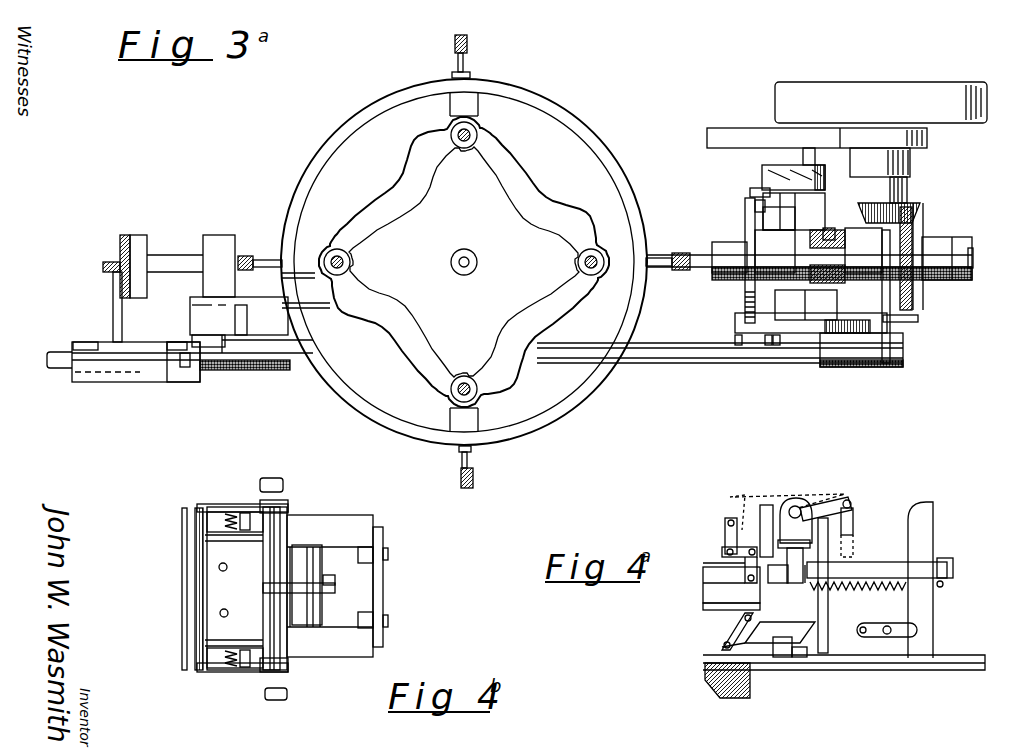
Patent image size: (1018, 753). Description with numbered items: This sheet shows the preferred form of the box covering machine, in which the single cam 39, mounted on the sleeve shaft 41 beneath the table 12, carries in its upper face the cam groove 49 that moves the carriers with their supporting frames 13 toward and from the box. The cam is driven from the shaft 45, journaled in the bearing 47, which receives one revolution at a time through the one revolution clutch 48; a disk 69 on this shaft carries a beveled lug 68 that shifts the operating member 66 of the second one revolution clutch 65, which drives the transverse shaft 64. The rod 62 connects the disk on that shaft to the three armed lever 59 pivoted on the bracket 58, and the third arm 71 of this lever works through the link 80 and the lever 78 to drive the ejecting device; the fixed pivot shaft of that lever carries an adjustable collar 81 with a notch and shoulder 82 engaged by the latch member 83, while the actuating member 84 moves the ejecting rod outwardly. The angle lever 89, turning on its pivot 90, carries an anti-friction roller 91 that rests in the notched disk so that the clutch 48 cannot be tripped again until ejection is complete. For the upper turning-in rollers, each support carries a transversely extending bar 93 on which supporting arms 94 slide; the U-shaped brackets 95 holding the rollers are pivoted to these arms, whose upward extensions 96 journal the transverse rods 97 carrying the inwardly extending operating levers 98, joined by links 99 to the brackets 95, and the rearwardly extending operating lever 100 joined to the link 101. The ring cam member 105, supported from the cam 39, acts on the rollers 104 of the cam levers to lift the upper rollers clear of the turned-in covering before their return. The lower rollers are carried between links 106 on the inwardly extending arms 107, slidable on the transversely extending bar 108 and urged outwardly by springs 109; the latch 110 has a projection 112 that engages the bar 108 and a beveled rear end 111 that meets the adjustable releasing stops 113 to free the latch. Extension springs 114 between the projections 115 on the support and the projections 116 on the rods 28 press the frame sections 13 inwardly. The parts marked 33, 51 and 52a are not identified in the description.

In FIG. 4a, the table 12 is at (703, 607).
In FIG. 4a, the supporting frames 13 is at (773, 584).
In FIG. 4b, the rods 28 is at (350, 620).
In FIG. 4a, the rods 28 is at (888, 564).
In FIG. 3a, the gear 33 is at (886, 330).
In FIG. 3a, the cam 39 is at (386, 190).
In FIG. 3a, the sleeve shaft 41 is at (477, 259).
In FIG. 3a, the shaft 45 is at (700, 252).
In FIG. 3a, the bearing 47 is at (830, 230).
In FIG. 3a, the one revolution clutch 48 is at (912, 222).
In FIG. 3a, the cam groove 49 is at (464, 262).
In FIG. 4a, the support block 51 is at (705, 592).
In FIG. 3a, the guide rail 52a is at (712, 362).
In FIG. 3a, the bracket 58 is at (182, 263).
In FIG. 3a, the three armed lever 59 is at (318, 306).
In FIG. 3a, the rod 62 is at (700, 342).
In FIG. 3a, the transverse shaft 64 is at (798, 322).
In FIG. 3a, the one revolution clutch 65 is at (762, 172).
In FIG. 3a, the operating member 66 is at (752, 202).
In FIG. 3a, the lug 68 is at (750, 192).
In FIG. 3a, the disk 69 is at (746, 216).
In FIG. 3a, the third arm 71 is at (252, 320).
In FIG. 3a, the lever 78 is at (192, 340).
In FIG. 3a, the link 80 is at (230, 332).
In FIG. 3a, the adjustable collar 81 is at (192, 376).
In FIG. 3a, the notch and shoulder 82 is at (222, 369).
In FIG. 3a, the latch member 83 is at (146, 372).
In FIG. 3a, the actuating member 84 is at (113, 336).
In FIG. 3a, the pivoted angle lever 89 is at (915, 318).
In FIG. 3a, the pivot 90 is at (806, 305).
In FIG. 3a, the anti-friction roller 91 is at (872, 340).
In FIG. 4b, the transversely extending bar 93 is at (284, 488).
In FIG. 4a, the transversely extending bar 93 is at (795, 540).
In FIG. 4b, the supporting arms 94 is at (250, 528).
In FIG. 4a, the supporting arms 94 is at (765, 503).
In FIG. 4b, the U-shaped brackets 95 is at (182, 514).
In FIG. 4a, the U-shaped brackets 95 is at (705, 570).
In FIG. 4b, the upward extension 96 is at (289, 506).
In FIG. 4a, the upward extension 96 is at (803, 502).
In FIG. 4b, the transverse rods 97 is at (267, 560).
In FIG. 4a, the transverse rods 97 is at (795, 506).
In FIG. 4b, the operating levers 98 is at (240, 506).
In FIG. 4a, the operating levers 98 is at (733, 516).
In FIG. 4b, the links 99 is at (198, 506).
In FIG. 4a, the links 99 is at (722, 548).
In FIG. 4b, the operating lever 100 is at (300, 586).
In FIG. 4a, the operating lever 100 is at (844, 498).
In FIG. 3a, the link 101 is at (455, 44).
In FIG. 4b, the link 101 is at (330, 596).
In FIG. 4a, the link 101 is at (854, 518).
In FIG. 3a, the rollers 104 is at (472, 76).
In FIG. 3a, the ring cam member 105 is at (312, 170).
In FIG. 4a, the links 106 is at (725, 635).
In FIG. 4a, the inwardly extending arms 107 is at (703, 664).
In FIG. 4a, the transversely extending bar 108 is at (780, 660).
In FIG. 4a, the springs 109 is at (722, 647).
In FIG. 4a, the latch 110 is at (726, 680).
In FIG. 4a, the beveled rear end 111 is at (803, 660).
In FIG. 4a, the projection 112 is at (790, 641).
In FIG. 4a, the adjustable releasing stops 113 is at (876, 640).
In FIG. 4a, the springs 114 is at (880, 589).
In FIG. 4a, the projections 115 is at (803, 578).
In FIG. 4a, the projections 116 is at (950, 582).